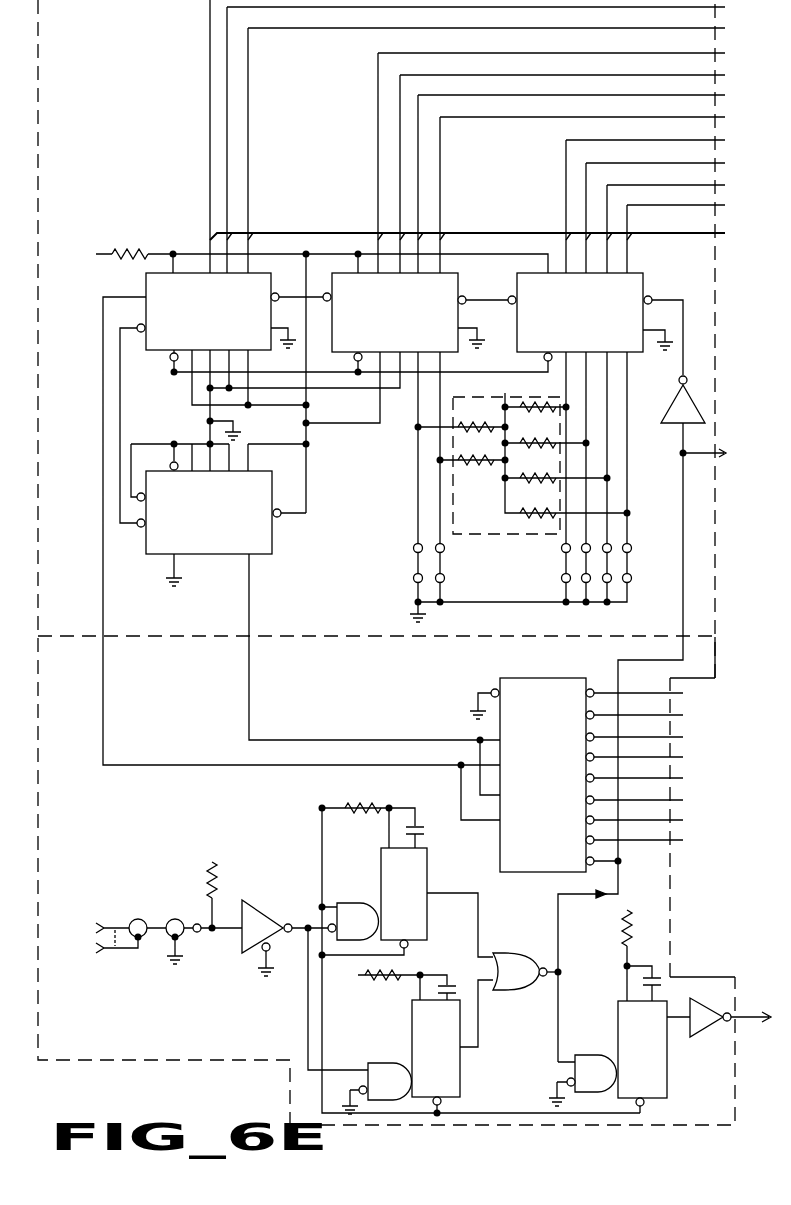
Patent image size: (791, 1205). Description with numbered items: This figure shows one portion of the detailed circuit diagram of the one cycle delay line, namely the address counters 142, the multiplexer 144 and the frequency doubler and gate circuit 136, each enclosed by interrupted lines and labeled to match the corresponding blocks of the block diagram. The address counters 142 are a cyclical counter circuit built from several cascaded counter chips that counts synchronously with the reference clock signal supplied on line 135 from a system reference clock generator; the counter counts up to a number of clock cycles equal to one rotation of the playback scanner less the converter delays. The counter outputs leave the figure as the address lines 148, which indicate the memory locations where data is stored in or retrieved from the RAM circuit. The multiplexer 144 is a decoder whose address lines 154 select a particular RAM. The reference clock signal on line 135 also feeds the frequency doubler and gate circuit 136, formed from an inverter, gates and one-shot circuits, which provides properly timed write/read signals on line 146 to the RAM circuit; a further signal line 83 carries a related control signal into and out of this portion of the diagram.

The address counters 142 is at (144, 91).
The address lines 148 is at (727, 248).
The reset signal line 83 is at (558, 926).
The frequency doubler and gate circuit 136 is at (155, 820).
The line carrying reference clock signal 135 is at (158, 912).
The multiplexer 144 is at (555, 848).
The address lines 154 is at (693, 848).
The line carrying write/read signals 146 is at (750, 1013).